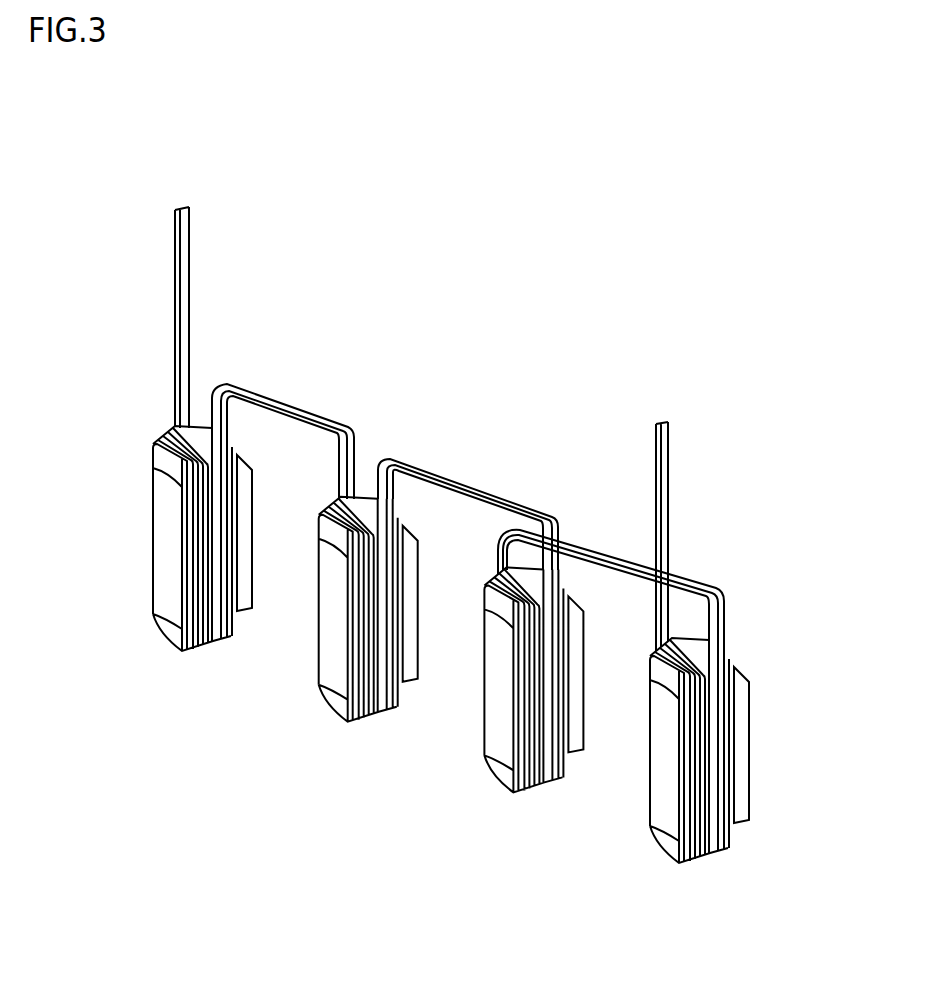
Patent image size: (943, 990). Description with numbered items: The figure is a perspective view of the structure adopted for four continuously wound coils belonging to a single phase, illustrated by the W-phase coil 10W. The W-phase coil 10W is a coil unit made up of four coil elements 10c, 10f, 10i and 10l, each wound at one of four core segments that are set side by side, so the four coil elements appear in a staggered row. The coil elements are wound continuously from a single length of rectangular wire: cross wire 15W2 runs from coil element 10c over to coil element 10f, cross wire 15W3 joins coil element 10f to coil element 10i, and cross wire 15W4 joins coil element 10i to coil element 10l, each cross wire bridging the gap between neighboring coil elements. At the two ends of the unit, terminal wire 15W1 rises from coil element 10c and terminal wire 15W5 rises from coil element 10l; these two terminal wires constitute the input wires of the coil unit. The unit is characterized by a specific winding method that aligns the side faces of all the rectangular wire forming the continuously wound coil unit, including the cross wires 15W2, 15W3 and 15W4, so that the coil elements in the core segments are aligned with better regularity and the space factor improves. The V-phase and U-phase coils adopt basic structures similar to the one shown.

The W-phase coil 10W is at (745, 400).
The coil element 10c is at (166, 630).
The coil element 10f is at (333, 702).
The coil element 10i is at (496, 773).
The coil element 10l is at (664, 845).
The terminal wire 15W1 is at (175, 322).
The cross wire 15W2 is at (290, 400).
The cross wire 15W3 is at (470, 474).
The cross wire 15W4 is at (612, 556).
The terminal wire 15W5 is at (672, 515).